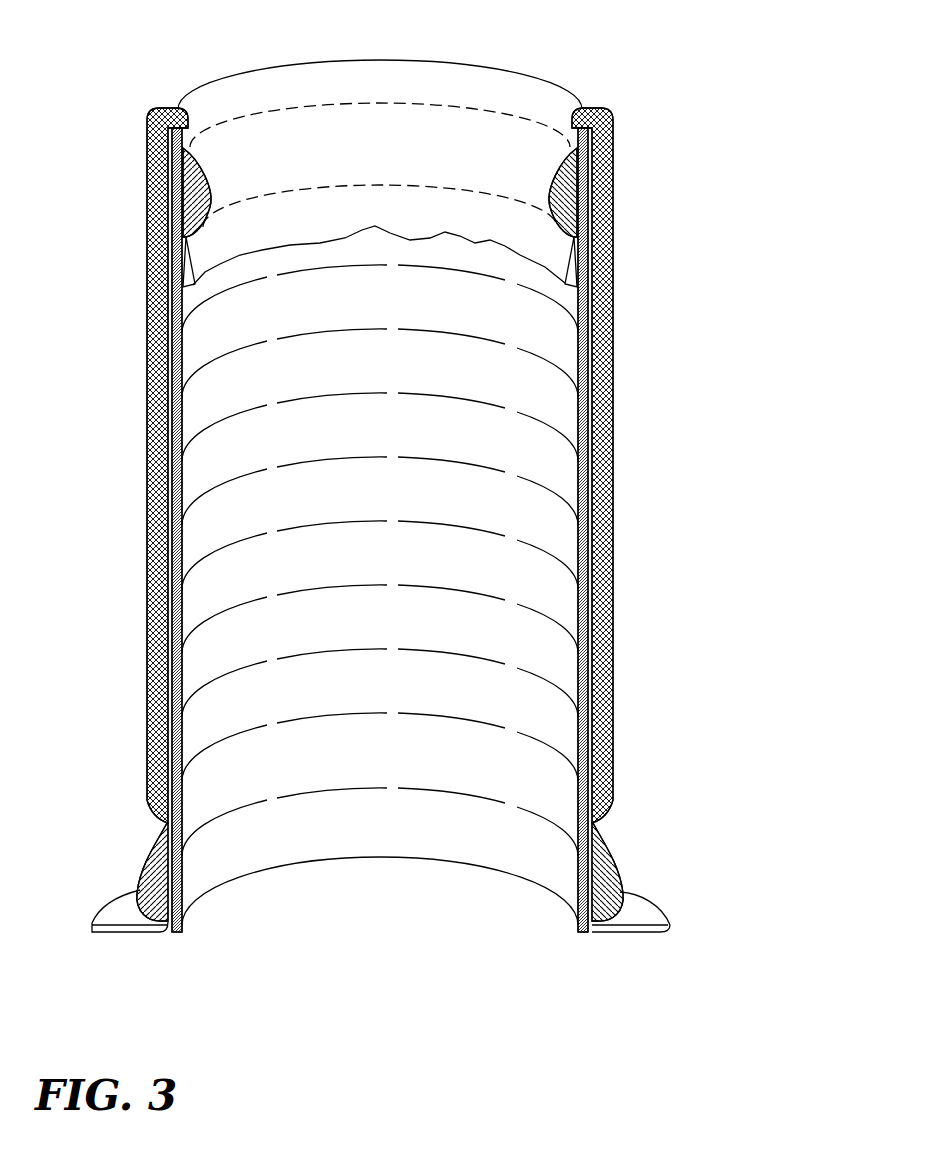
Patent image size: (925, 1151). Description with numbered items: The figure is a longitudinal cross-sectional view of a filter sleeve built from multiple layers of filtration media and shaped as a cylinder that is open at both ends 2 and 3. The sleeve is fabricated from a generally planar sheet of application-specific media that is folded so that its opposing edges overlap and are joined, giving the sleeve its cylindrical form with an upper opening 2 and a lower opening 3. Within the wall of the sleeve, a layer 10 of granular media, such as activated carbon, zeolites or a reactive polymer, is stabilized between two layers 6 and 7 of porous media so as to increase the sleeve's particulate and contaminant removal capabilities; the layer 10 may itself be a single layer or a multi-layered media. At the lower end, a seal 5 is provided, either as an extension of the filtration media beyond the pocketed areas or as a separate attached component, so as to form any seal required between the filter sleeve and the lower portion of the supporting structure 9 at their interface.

The upper end opening 2 is at (388, 200).
The lower opening 3 is at (389, 745).
The seal 5 is at (668, 932).
The porous media layer 6 is at (614, 341).
The porous media layer 7 is at (594, 483).
The supporting structure 9 is at (182, 876).
The granular media layer 10 is at (152, 394).